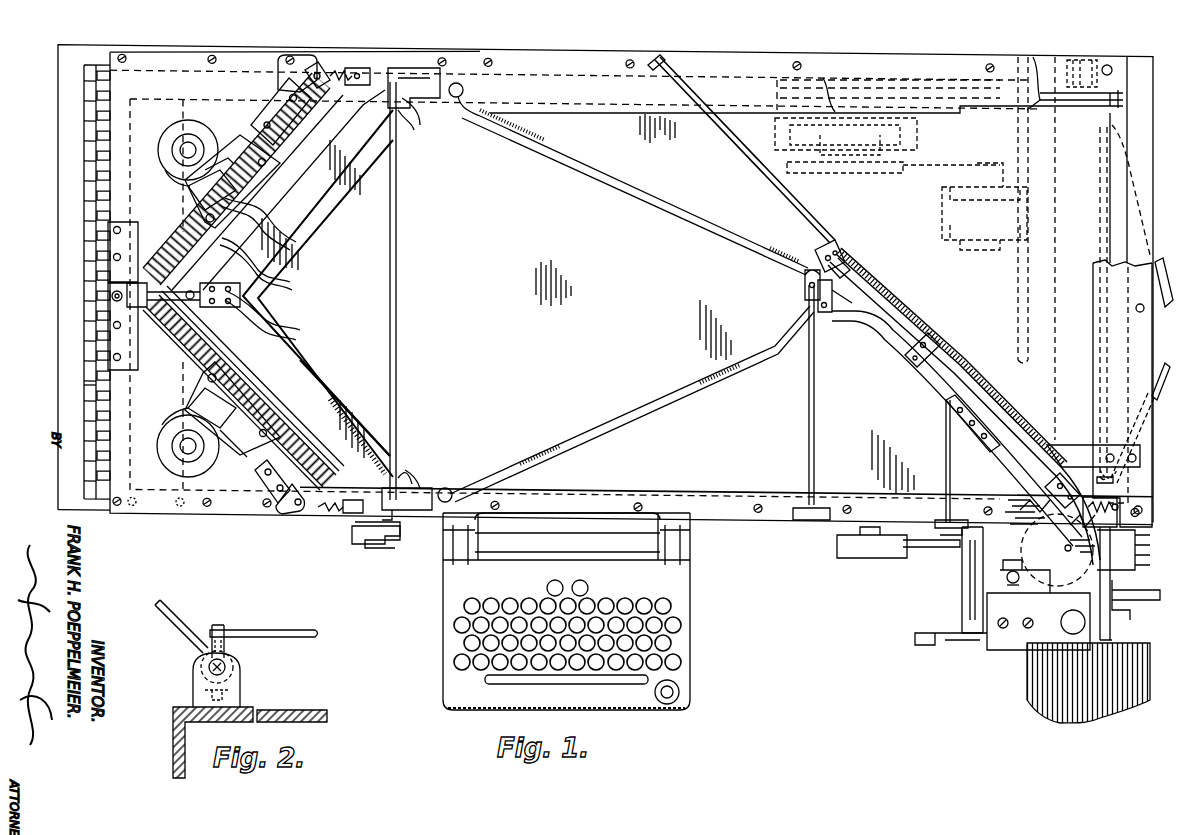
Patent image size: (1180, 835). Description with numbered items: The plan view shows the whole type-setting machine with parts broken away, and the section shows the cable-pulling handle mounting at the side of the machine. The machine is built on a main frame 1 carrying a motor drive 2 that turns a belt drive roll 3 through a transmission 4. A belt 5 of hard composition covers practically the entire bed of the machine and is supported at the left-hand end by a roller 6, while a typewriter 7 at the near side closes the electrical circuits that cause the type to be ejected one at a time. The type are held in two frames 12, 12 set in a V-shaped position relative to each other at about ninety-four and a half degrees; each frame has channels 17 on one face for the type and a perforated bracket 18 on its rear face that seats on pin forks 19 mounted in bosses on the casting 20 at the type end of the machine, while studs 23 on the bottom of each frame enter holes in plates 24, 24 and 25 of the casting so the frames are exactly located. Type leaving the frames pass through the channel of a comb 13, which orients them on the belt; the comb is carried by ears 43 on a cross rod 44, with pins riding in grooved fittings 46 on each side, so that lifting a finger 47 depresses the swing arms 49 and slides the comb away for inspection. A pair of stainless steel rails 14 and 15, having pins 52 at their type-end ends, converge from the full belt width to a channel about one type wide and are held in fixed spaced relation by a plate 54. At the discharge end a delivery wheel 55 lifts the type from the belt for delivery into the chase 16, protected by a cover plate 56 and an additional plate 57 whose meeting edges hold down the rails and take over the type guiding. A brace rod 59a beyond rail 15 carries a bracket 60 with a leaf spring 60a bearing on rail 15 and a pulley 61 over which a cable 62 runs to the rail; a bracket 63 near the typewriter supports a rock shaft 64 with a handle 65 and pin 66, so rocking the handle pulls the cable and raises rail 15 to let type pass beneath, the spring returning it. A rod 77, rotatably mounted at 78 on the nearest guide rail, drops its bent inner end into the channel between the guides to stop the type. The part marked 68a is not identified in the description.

In FIG. 1, the main frame 1 is at (745, 530).
In FIG. 2, the main frame 1 is at (170, 732).
In FIG. 1, the motor drive 2 is at (827, 582).
In FIG. 1, the belt drive roll 3 is at (75, 133).
In FIG. 1, the transmission 4 is at (915, 138).
In FIG. 1, the belt 5 is at (588, 303).
In FIG. 2, the belt 5 is at (330, 714).
In FIG. 1, the roller 6 is at (82, 392).
In FIG. 1, the typewriter 7 is at (690, 645).
In FIG. 1, the frame 12 is at (300, 222).
In FIG. 1, the comb 13 is at (322, 386).
In FIG. 1, the rail 14 is at (652, 396).
In FIG. 1, the rail 15 is at (448, 31).
In FIG. 1, the chase 16 is at (75, 298).
In FIG. 1, the channels 17 is at (262, 265).
In FIG. 1, the bracket 18 is at (190, 186).
In FIG. 1, the pin forks 19 is at (258, 160).
In FIG. 1, the casting 20 is at (205, 130).
In FIG. 1, the studs 23 is at (318, 60).
In FIG. 1, the plates 24 is at (286, 56).
In FIG. 1, the plate 25 is at (112, 292).
In FIG. 1, the ears 43 is at (418, 128).
In FIG. 1, the cross rod 44 is at (398, 400).
In FIG. 1, the grooved fittings 46 is at (424, 77).
In FIG. 1, the finger 47 is at (362, 540).
In FIG. 1, the swing arm 49 is at (372, 72).
In FIG. 1, the pins 52 is at (470, 88).
In FIG. 1, the plate 54 is at (940, 344).
In FIG. 1, the delivery wheel 55 is at (1022, 558).
In FIG. 1, the cover plate 56 is at (1010, 504).
In FIG. 1, the additional plate 57 is at (1122, 534).
In FIG. 1, the brace rod 59a is at (812, 212).
In FIG. 1, the bracket 60 is at (840, 245).
In FIG. 1, the leaf spring 60a is at (848, 276).
In FIG. 1, the pulley 61 is at (806, 288).
In FIG. 1, the cable 62 is at (805, 416).
In FIG. 1, the bracket 63 is at (808, 520).
In FIG. 2, the bracket 63 is at (244, 686).
In FIG. 2, the rock shaft 64 is at (240, 664).
In FIG. 2, the handle 65 is at (172, 605).
In FIG. 2, the pin 66 is at (232, 616).
In FIG. 1, the tube clamp 68a is at (810, 312).
In FIG. 1, the rod 77 is at (945, 470).
In FIG. 1, the rotatable mounting 78 is at (950, 408).